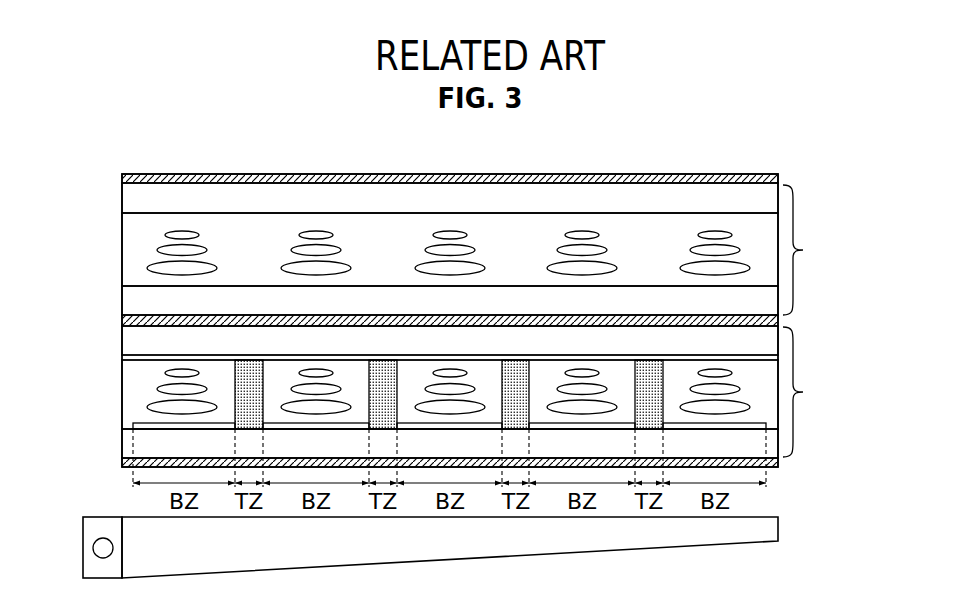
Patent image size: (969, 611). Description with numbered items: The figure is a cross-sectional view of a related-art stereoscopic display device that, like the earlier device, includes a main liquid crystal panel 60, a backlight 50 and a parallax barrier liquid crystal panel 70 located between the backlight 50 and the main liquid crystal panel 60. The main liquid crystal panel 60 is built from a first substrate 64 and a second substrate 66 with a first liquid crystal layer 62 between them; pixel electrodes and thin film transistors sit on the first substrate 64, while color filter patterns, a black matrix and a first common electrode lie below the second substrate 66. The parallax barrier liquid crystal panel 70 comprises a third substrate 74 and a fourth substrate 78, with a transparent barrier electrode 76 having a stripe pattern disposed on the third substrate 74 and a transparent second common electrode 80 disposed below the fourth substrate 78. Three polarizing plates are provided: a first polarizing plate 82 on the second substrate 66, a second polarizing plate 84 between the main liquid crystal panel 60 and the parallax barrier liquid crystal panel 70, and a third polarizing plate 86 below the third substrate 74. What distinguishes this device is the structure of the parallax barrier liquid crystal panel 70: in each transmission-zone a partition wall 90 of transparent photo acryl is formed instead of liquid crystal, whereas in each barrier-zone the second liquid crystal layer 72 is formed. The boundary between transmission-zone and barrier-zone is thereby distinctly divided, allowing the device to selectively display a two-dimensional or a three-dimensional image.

The backlight 50 is at (757, 532).
The main liquid crystal panel 60 is at (812, 250).
The first liquid crystal layer 62 is at (130, 238).
The first substrate 64 is at (130, 294).
The second substrate 66 is at (128, 190).
The parallax barrier liquid crystal panel 70 is at (812, 392).
The second liquid crystal layer 72 is at (125, 390).
The third substrate 74 is at (130, 448).
The barrier electrode 76 is at (133, 424).
The fourth substrate 78 is at (130, 337).
The second common electrode 80 is at (122, 358).
The first polarizing plate 82 is at (778, 174).
The second polarizing plate 84 is at (780, 320).
The third polarizing plate 86 is at (780, 462).
The partition wall 90 is at (235, 380).